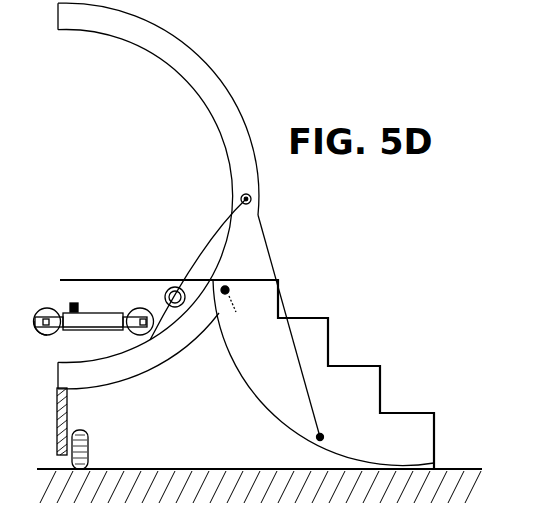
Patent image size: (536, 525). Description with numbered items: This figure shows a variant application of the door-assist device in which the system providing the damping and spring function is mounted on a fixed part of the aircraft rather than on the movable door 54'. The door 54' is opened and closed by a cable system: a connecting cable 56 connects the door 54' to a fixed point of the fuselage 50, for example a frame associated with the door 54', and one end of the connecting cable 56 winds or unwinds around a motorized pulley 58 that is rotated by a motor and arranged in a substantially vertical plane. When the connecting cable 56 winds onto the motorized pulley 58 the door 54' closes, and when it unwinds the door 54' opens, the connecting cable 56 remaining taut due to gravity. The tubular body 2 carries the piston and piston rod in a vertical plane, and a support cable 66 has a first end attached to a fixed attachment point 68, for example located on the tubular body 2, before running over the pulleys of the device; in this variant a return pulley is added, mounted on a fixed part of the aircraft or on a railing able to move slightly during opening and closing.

The tubular body 2 is at (112, 318).
The fuselage 50 is at (193, 76).
The door 54' is at (322, 340).
The connecting cable 56 is at (210, 236).
The motorized pulley 58 is at (181, 307).
The support cable 66 is at (63, 337).
The fixed attachment point 68 is at (71, 304).